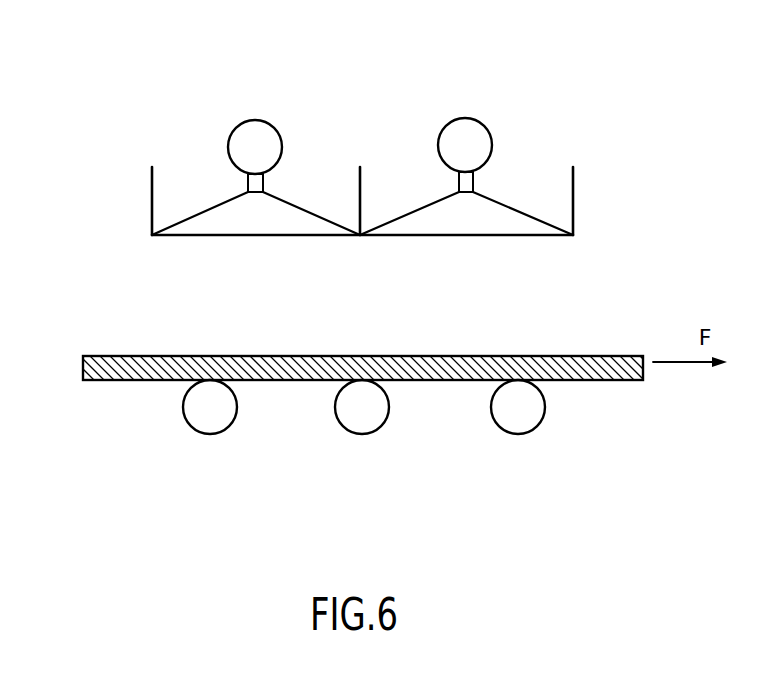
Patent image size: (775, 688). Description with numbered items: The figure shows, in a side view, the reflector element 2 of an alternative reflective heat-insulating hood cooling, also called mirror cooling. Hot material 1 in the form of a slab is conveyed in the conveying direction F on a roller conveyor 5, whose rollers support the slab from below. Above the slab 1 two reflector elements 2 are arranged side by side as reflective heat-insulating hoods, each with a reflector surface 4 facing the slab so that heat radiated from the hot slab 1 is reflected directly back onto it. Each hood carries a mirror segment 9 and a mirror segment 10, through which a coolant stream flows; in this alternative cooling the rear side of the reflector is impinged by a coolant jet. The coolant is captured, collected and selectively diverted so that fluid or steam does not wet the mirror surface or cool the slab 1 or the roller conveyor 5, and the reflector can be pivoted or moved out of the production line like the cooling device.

The hot material 1 is at (412, 362).
The reflector element 2 is at (399, 257).
The reflector surface 4 is at (187, 238).
The roller conveyor 5 is at (217, 415).
The segment 9 is at (256, 100).
The segment 10 is at (463, 102).